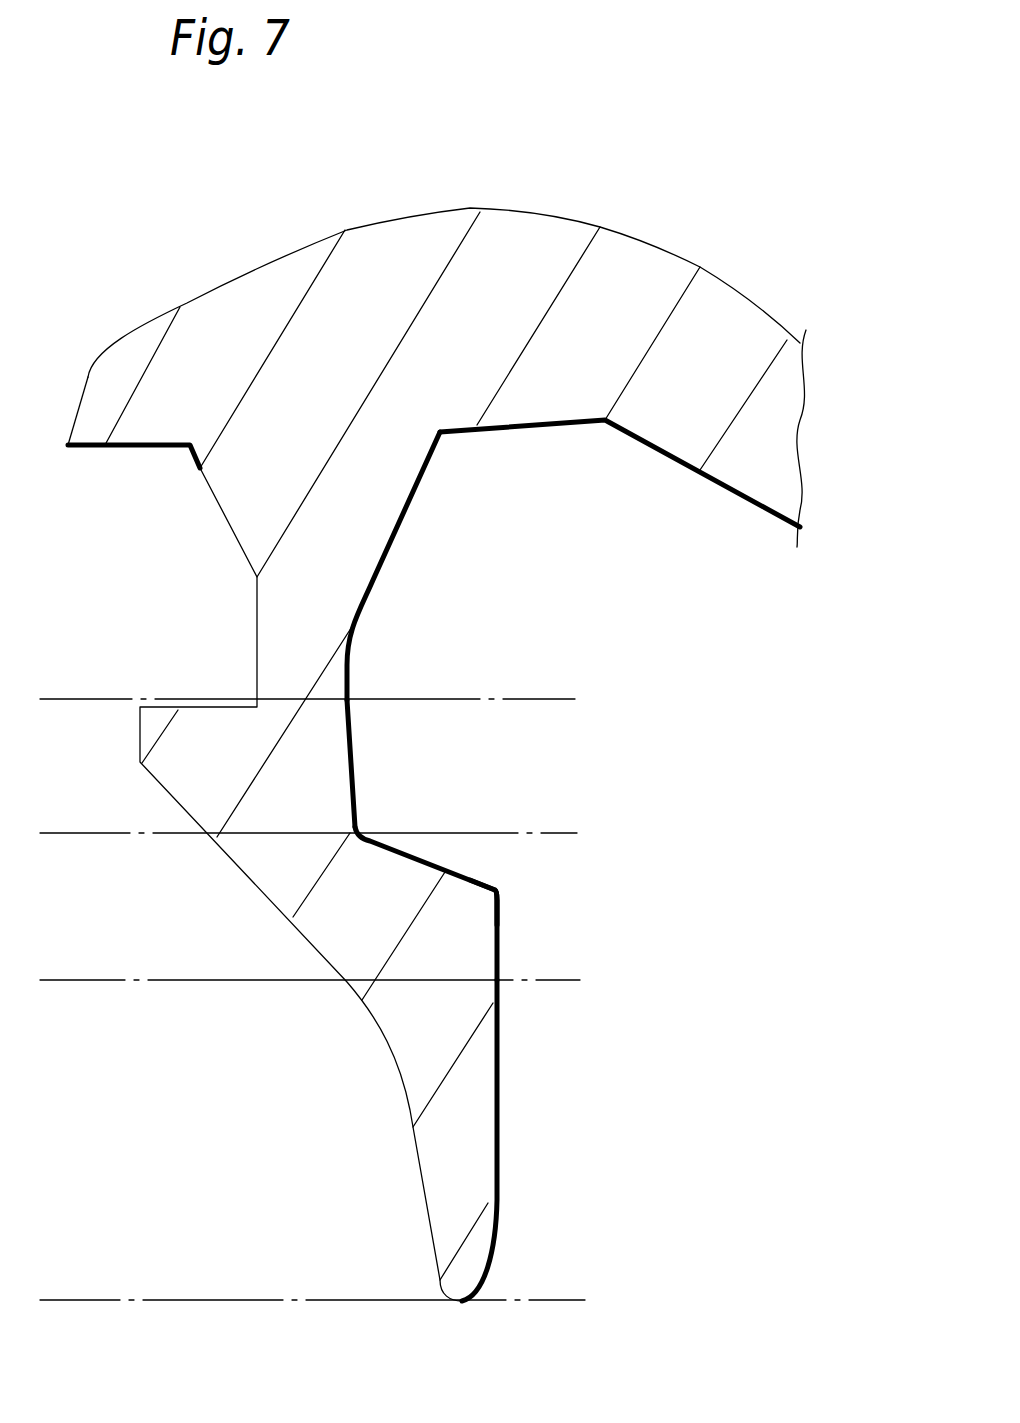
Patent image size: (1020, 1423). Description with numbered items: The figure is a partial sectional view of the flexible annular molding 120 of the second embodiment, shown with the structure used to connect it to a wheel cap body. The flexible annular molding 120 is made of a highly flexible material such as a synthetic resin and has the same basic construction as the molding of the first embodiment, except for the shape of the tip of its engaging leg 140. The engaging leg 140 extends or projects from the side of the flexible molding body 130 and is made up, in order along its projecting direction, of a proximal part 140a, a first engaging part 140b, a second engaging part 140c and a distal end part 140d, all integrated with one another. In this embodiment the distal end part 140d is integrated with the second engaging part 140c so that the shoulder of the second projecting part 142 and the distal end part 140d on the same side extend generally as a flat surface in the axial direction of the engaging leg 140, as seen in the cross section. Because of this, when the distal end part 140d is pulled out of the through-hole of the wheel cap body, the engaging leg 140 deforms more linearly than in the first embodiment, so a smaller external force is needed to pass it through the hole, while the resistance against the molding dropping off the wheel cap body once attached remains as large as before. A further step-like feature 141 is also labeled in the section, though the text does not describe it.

The flexible annular molding 120 is at (724, 238).
The flexible molding body 130 is at (418, 237).
The engaging leg 140 is at (670, 1160).
The proximal part 140a is at (565, 425).
The first engaging part 140b is at (565, 697).
The second engaging part 140c is at (567, 833).
The distal end part 140d is at (573, 980).
The flange step 141 is at (140, 735).
The second projecting part 142 is at (527, 877).